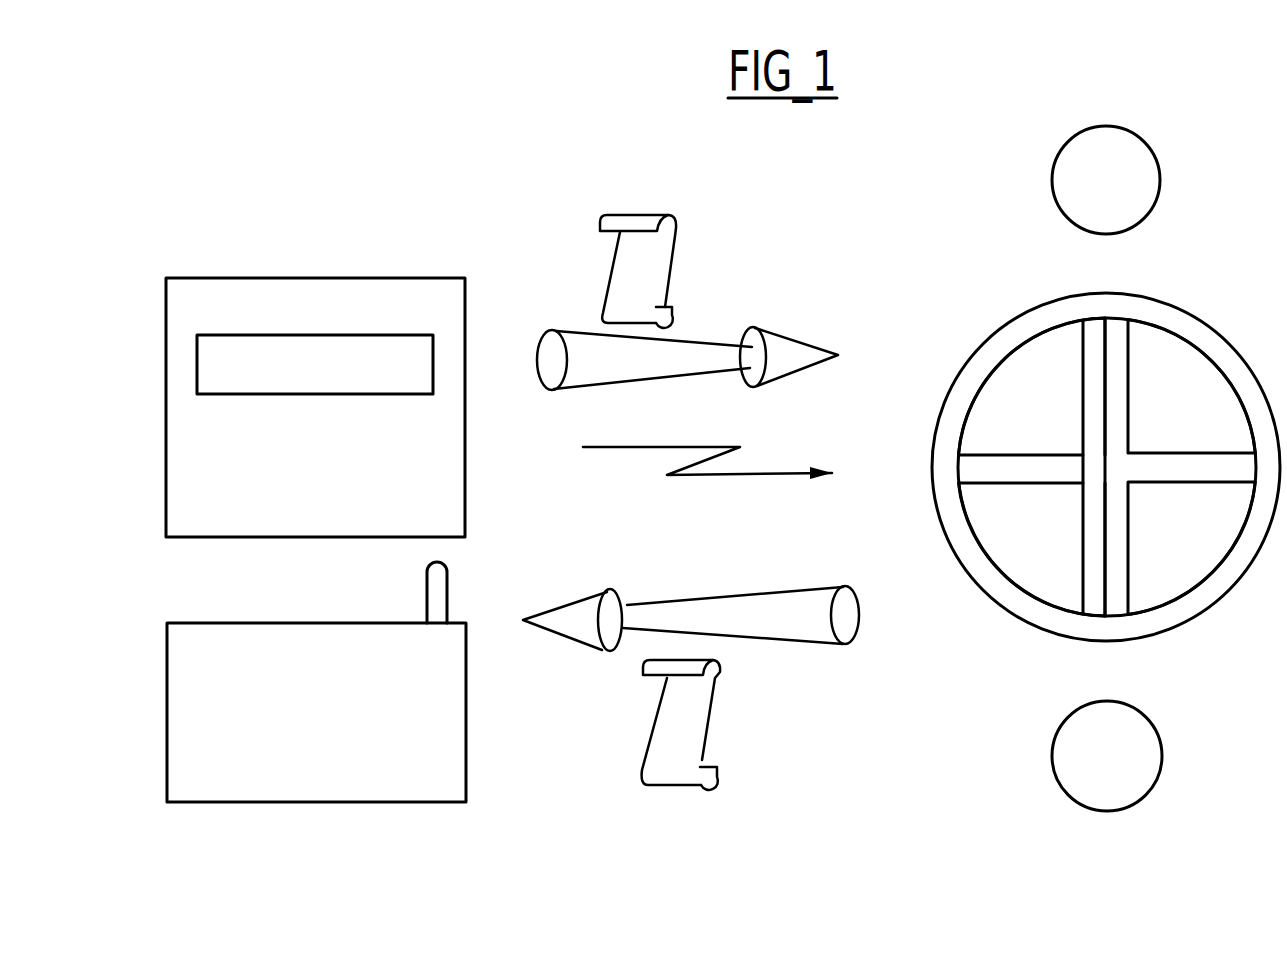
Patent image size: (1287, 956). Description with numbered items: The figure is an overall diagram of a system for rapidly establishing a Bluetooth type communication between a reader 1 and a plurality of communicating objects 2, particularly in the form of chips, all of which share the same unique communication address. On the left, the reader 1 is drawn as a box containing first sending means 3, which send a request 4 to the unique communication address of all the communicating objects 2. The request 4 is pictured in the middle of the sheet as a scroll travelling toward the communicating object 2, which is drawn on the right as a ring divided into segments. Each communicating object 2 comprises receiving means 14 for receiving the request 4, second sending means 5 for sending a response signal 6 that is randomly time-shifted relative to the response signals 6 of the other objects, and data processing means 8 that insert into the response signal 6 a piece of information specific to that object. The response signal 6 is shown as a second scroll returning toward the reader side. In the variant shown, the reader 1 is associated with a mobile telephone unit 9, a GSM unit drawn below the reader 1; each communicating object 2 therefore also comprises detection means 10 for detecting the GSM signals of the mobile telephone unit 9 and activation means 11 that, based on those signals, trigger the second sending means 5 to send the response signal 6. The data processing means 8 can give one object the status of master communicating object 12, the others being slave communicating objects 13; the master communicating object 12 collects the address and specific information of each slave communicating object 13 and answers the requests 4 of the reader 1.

The reader 1 is at (245, 298).
The communicating object 2 is at (1142, 308).
The first sending means 3 is at (367, 352).
The request 4 is at (640, 220).
The second sending means 5 is at (1028, 568).
The response signal 6 is at (668, 768).
The data processing means 8 is at (1190, 377).
The mobile telephone unit 9 is at (265, 782).
The detection means 10 is at (1022, 378).
The activation means 11 is at (1097, 602).
The master communicating object 12 is at (1122, 792).
The slave communicating object 13 is at (1133, 165).
The receiving means 14 is at (1177, 568).